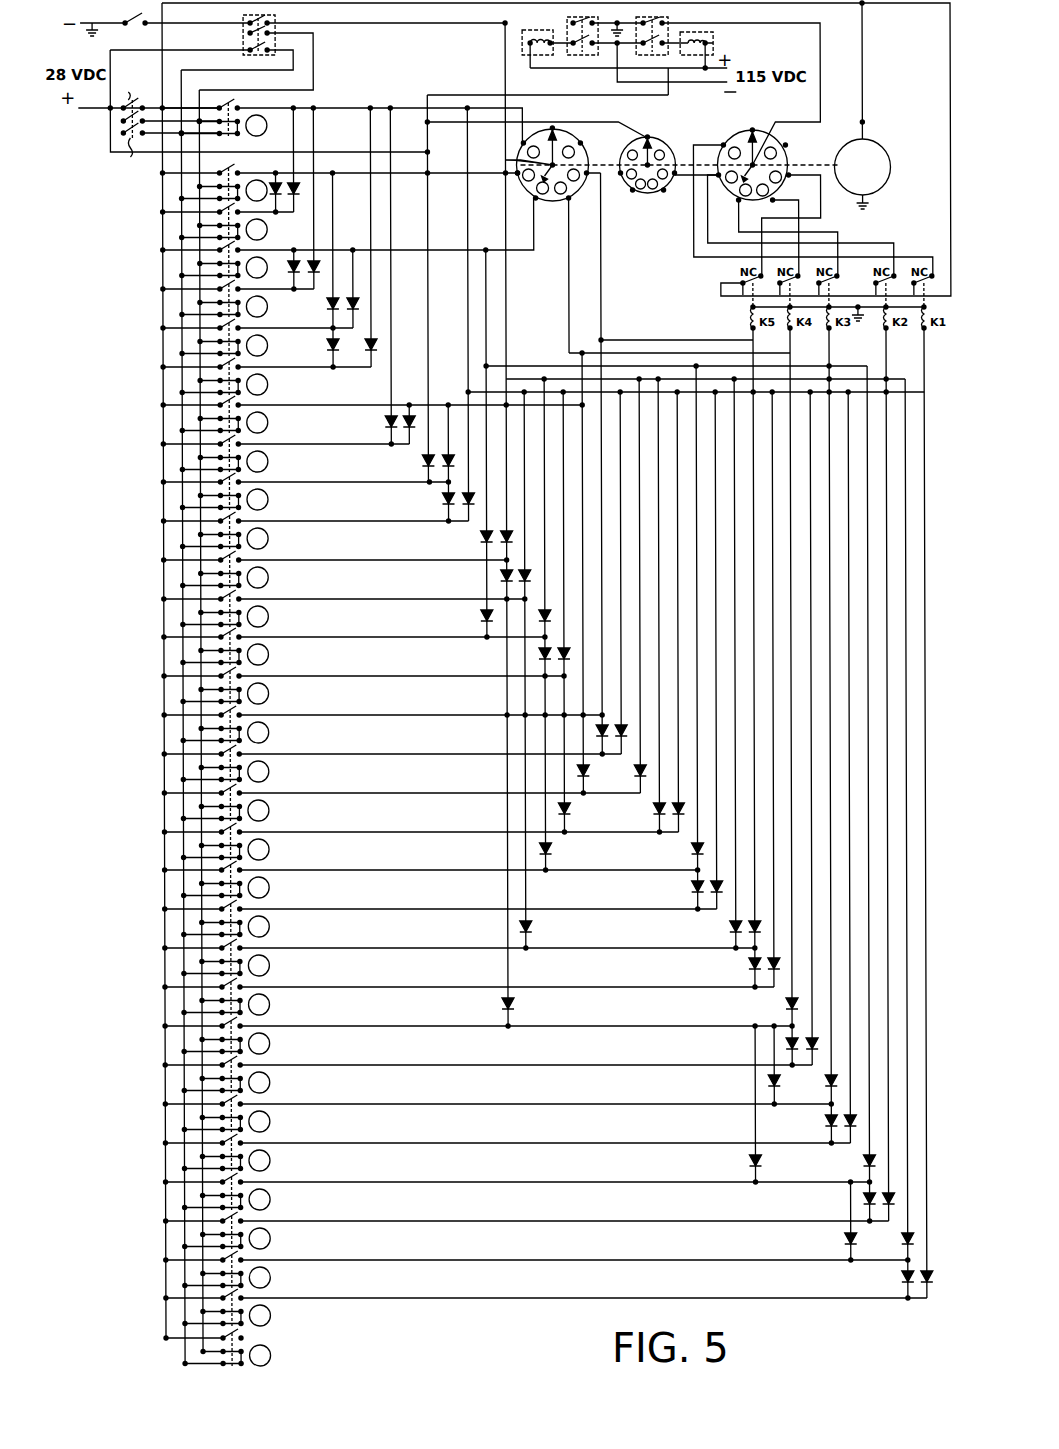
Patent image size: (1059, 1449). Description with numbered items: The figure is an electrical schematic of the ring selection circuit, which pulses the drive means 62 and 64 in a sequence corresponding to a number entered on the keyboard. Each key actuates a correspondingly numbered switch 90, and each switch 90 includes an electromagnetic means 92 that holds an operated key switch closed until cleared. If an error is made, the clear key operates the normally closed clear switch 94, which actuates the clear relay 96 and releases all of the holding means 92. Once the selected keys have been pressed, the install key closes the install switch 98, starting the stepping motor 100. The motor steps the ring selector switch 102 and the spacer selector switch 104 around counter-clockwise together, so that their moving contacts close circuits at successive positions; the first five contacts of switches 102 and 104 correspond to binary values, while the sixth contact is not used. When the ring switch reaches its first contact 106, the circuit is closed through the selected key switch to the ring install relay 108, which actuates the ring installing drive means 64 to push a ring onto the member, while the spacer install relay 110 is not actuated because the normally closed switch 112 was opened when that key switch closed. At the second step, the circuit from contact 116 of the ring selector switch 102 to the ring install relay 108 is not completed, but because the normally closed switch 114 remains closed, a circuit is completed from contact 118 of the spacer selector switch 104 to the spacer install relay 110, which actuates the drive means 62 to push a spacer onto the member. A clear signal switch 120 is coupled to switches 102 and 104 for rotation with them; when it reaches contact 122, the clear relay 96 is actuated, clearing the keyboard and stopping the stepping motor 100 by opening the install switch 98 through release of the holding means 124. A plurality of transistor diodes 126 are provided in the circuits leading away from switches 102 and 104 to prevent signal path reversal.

The drive means 62 is at (713, 44).
The ring installing drive means 64 is at (522, 40).
The switch 90 is at (237, 100).
The electromagnetic means 92 is at (240, 133).
The clear switch 94 is at (133, 20).
The clear relay 96 is at (243, 42).
The install switch 98 is at (168, 112).
The stepping motor 100 is at (880, 150).
The ring selector switch 102 is at (653, 202).
The spacer selector switch 104 is at (813, 192).
The first contact 106 is at (523, 143).
The ring install relay 108 is at (572, 57).
The spacer install relay 110 is at (655, 58).
The normally closed switch 112 is at (932, 283).
The normally closed switch 114 is at (875, 283).
The contact 116 is at (517, 176).
The contact 118 is at (737, 144).
The clear signal switch 120 is at (573, 178).
The contact 122 is at (662, 146).
The holding means 124 is at (162, 173).
The transistor diodes 126 is at (370, 352).